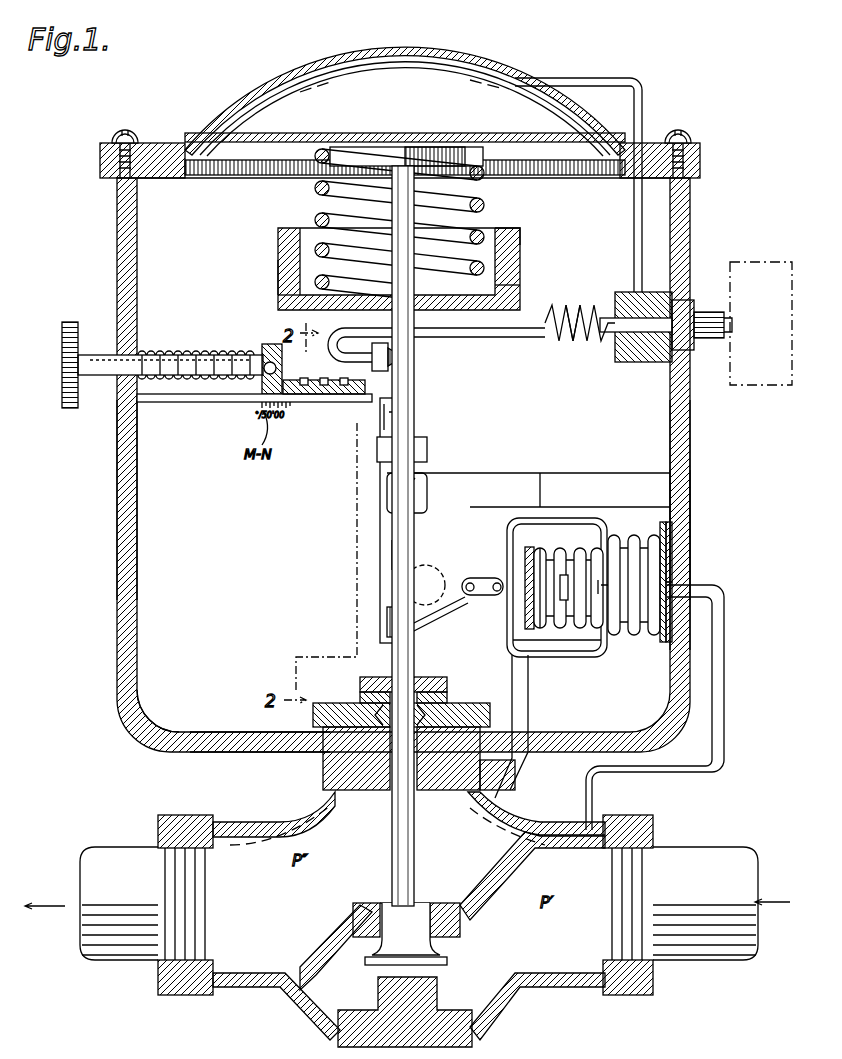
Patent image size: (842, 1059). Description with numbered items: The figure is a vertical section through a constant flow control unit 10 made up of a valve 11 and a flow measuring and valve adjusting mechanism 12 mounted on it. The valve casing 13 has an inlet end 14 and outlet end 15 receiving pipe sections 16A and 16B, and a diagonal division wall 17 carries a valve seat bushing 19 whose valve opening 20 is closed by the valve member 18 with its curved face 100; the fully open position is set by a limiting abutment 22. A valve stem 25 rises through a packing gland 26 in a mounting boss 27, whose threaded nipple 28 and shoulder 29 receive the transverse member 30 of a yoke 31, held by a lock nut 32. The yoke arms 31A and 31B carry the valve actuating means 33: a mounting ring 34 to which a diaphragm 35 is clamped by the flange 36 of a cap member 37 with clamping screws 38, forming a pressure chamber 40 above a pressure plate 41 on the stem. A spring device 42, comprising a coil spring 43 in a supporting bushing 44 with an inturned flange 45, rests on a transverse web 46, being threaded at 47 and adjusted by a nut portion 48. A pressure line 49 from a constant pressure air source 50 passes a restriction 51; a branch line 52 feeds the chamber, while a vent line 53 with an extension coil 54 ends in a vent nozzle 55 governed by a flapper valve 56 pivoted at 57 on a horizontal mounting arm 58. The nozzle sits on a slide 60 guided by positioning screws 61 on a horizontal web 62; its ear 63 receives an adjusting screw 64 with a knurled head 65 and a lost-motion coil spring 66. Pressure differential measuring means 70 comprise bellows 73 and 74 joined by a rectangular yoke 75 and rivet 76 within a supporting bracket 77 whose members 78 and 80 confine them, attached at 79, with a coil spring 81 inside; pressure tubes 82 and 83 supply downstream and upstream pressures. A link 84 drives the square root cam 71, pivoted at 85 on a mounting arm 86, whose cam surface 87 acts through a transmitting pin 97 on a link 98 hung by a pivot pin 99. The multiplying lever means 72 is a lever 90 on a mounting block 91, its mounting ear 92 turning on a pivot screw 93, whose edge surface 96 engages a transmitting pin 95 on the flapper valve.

The constant flow control unit 10 is at (122, 739).
The valve 11 is at (292, 808).
The flow measuring and valve adjusting mechanism 12 is at (699, 502).
The valve casing 13 is at (335, 1028).
The inlet end 14 is at (636, 995).
The outlet end 15 is at (175, 815).
The inlet section of pipe line 16A is at (712, 948).
The outlet section of pipe line 16B is at (128, 948).
The division wall 17 is at (312, 945).
The valve member 18 is at (432, 948).
The valve seat bushing 19 is at (445, 903).
The valve opening 20 is at (436, 903).
The limiting abutment 22 is at (447, 967).
The valve stem 25 is at (392, 826).
The packing gland 26 is at (448, 705).
The mounting boss 27 is at (323, 760).
The threaded nipple 28 is at (362, 700).
The shoulder 29 is at (497, 773).
The transverse member 30 is at (210, 732).
The yoke 31 is at (165, 740).
The yoke arm 31A is at (117, 498).
The yoke arm 31B is at (680, 470).
The lock nut 32 is at (475, 703).
The valve actuating means 33 is at (216, 108).
The mounting ring 34 is at (212, 176).
The flexible diaphragm 35 is at (262, 132).
The flange 36 is at (165, 143).
The cap member 37 is at (375, 56).
The clamping screws 38 is at (110, 135).
The pressure chamber 40 is at (465, 78).
The pressure plate 41 is at (535, 133).
The spring device 42 is at (497, 209).
The expansive coil spring 43 is at (312, 186).
The supporting bushing 44 is at (510, 288).
The inturned flange 45 is at (285, 300).
The transverse web 46 is at (522, 250).
The threaded connection 47 is at (278, 284).
The nut portion 48 is at (520, 235).
The pressure line 49 is at (700, 350).
The constant pressure air source 50 is at (760, 262).
The restriction 51 is at (645, 371).
The branch line 52 is at (634, 203).
The vent line 53 is at (548, 330).
The extension coil 54 is at (576, 342).
The vent nozzle 55 is at (405, 353).
The flapper valve 56 is at (412, 385).
The pivot 57 is at (410, 490).
The horizontal mounting arm 58 is at (570, 473).
The slide 60 is at (345, 395).
The positioning screws 61 is at (306, 395).
The horizontal web 62 is at (238, 400).
The ear 63 is at (268, 344).
The adjusting screw 64 is at (92, 355).
The knurled head 65 is at (70, 408).
The expansive coil spring 66 is at (172, 350).
The pressure differential measuring means 70 is at (636, 642).
The square root cam 71 is at (450, 612).
The multiplying lever means 72 is at (382, 484).
The bellows 73 is at (566, 548).
The bellows 74 is at (655, 525).
The rectangular yoke 75 is at (590, 657).
The rivet 76 is at (604, 547).
The supporting bracket 77 is at (560, 651).
The bracket member 78 is at (672, 540).
The connection 79 is at (672, 562).
The bracket member 80 is at (525, 553).
The expansive coil spring 81 is at (542, 548).
The pressure tube 82 is at (528, 775).
The pressure tube 83 is at (724, 712).
The link 84 is at (478, 580).
The pivot 85 is at (447, 562).
The mounting arm 86 is at (510, 528).
The cam surface 87 is at (387, 617).
The lever 90 is at (392, 556).
The mounting block 91 is at (412, 442).
The mounting ear 92 is at (427, 448).
The pivot screw 93 is at (377, 452).
The transmitting pin 95 is at (412, 420).
The edge surface 96 is at (402, 630).
The transmitting pin 97 is at (398, 565).
The link 98 is at (380, 536).
The pivot pin 99 is at (409, 513).
The curved face 100 is at (366, 903).